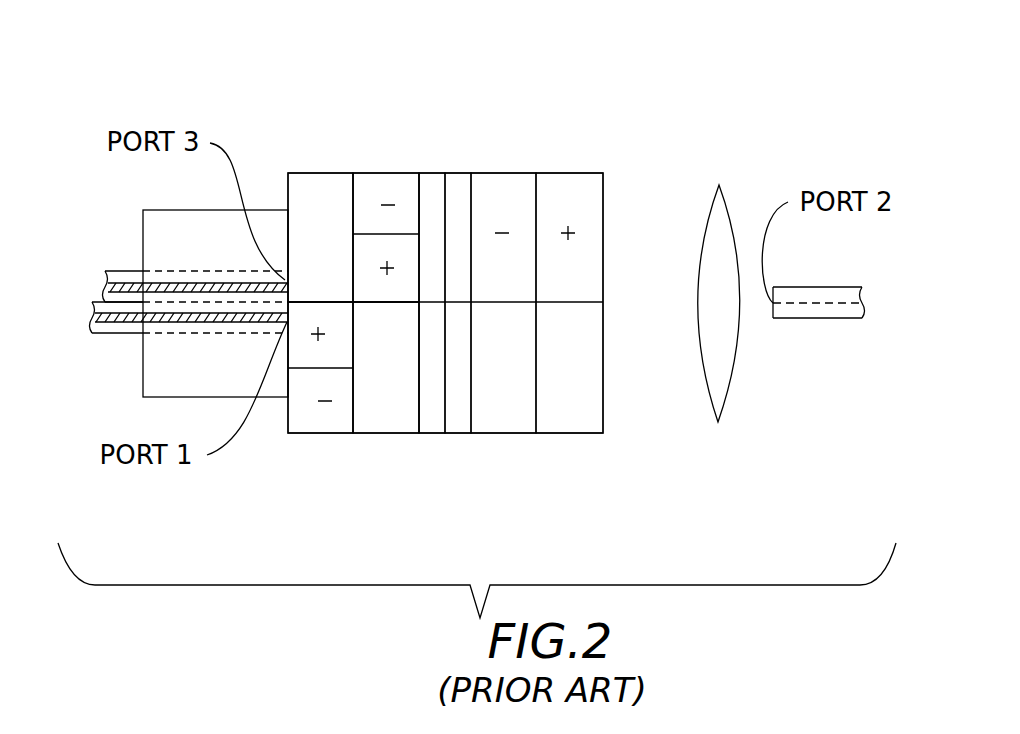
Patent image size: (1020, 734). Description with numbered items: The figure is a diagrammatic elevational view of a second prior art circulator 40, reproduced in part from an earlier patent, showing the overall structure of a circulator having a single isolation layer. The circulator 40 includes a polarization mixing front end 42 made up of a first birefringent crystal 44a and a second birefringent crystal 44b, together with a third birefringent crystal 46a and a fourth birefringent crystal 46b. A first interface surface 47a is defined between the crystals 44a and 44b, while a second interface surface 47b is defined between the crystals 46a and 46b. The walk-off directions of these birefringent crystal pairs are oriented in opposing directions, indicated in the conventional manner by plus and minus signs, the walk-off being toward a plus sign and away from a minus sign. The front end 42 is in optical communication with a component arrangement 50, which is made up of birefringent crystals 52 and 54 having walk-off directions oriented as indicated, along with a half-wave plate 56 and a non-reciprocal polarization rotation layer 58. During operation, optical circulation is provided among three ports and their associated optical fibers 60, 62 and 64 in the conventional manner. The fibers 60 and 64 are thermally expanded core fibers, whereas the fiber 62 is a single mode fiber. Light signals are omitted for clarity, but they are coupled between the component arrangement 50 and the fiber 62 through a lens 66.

The circulator 40 is at (671, 74).
The polarization mixing front end 42 is at (293, 477).
The first birefringent crystal 44a is at (313, 178).
The second birefringent crystal 44b is at (287, 415).
The third birefringent crystal 46a is at (395, 178).
The fourth birefringent crystal 46b is at (395, 423).
The first interface surface 47a is at (295, 370).
The second interface surface 47b is at (369, 178).
The component arrangement 50 is at (420, 477).
The birefringent crystal 52 is at (587, 182).
The birefringent crystal 54 is at (508, 178).
The half-wave plate 56 is at (460, 178).
The non-reciprocal polarization rotation layer 58 is at (433, 177).
The optical fiber 60 is at (117, 333).
The optical fiber 62 is at (793, 320).
The optical fiber 64 is at (128, 273).
The lens 66 is at (715, 252).